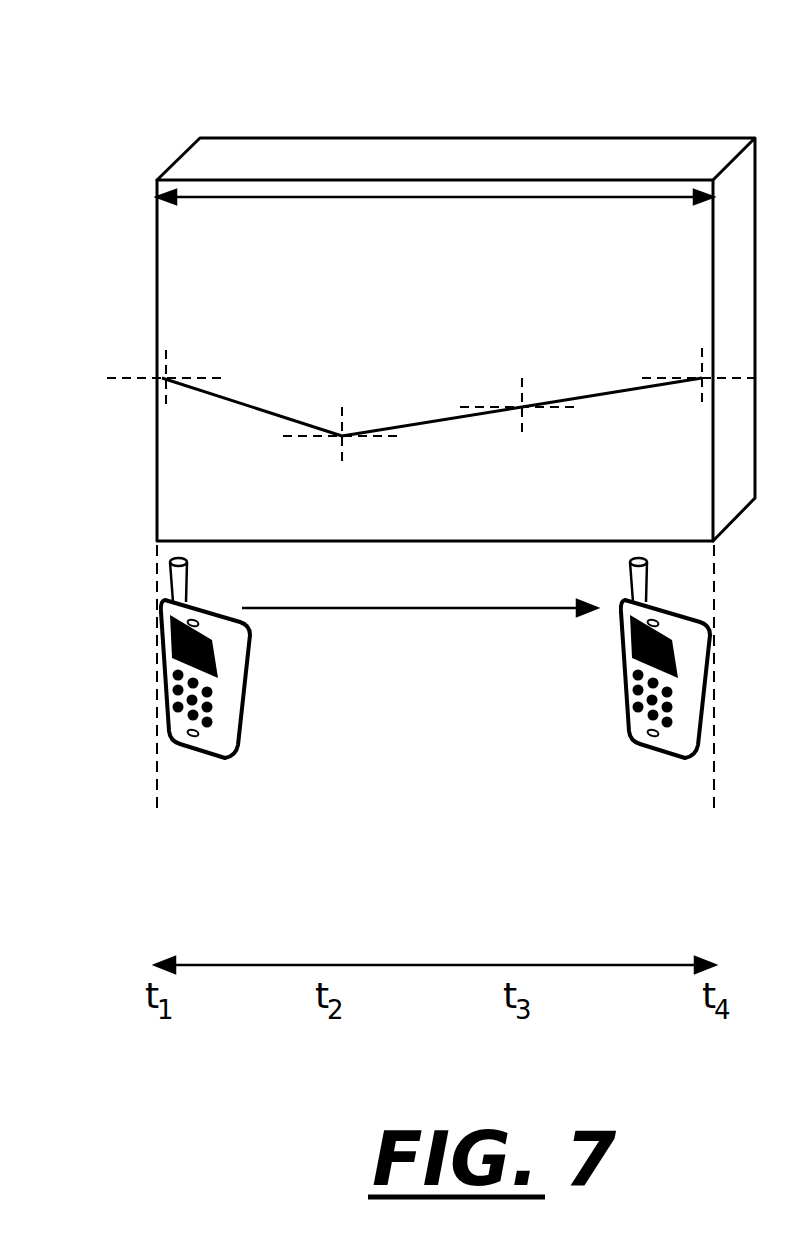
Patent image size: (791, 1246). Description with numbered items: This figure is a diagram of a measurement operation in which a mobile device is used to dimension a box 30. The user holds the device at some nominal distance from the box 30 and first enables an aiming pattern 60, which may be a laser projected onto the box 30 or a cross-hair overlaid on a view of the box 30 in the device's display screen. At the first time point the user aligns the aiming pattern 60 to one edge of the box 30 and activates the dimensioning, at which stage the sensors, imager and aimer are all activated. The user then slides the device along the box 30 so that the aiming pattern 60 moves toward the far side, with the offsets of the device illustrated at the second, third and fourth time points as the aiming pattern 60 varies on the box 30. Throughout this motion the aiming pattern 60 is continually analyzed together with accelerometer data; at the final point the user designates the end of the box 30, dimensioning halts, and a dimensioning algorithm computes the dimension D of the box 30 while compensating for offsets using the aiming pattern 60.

The box 30 is at (582, 142).
The aiming pattern 60 is at (140, 380).